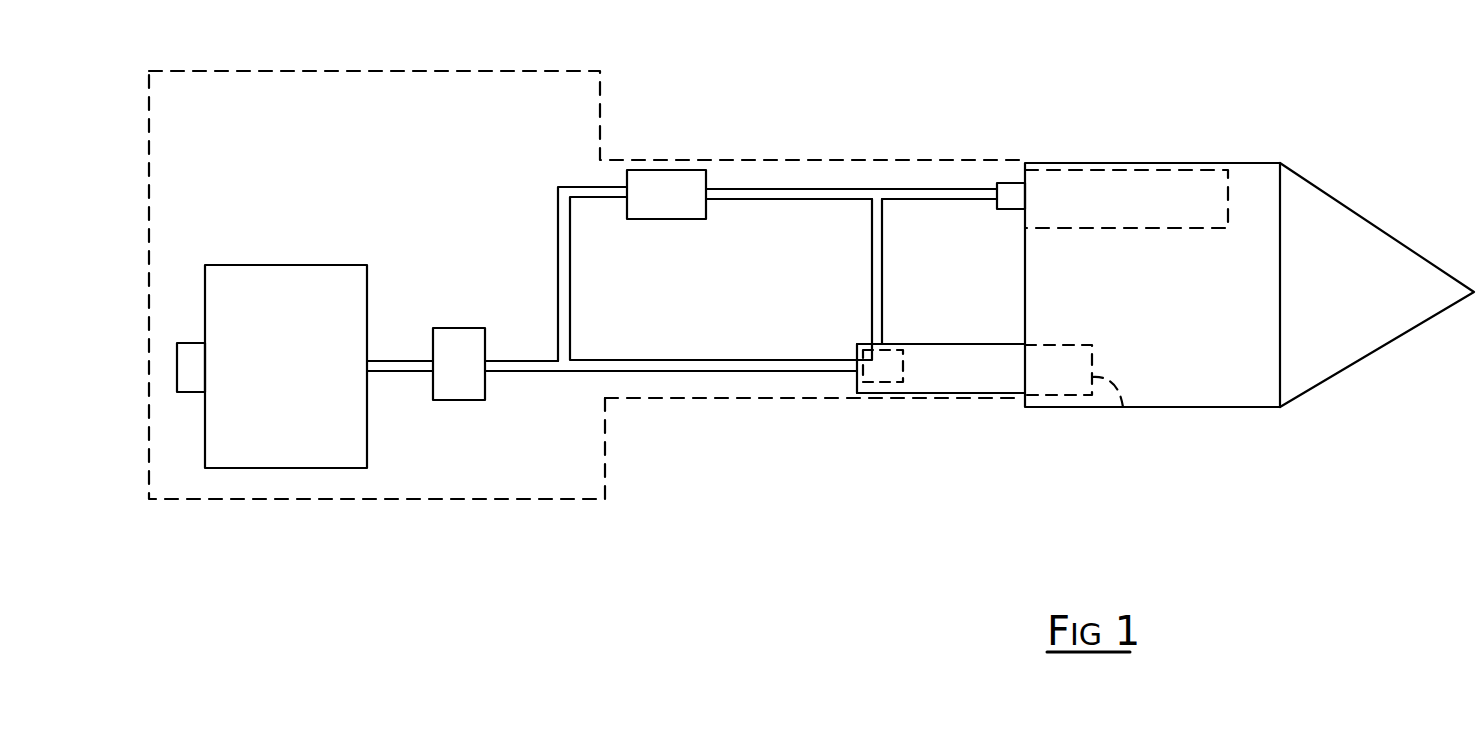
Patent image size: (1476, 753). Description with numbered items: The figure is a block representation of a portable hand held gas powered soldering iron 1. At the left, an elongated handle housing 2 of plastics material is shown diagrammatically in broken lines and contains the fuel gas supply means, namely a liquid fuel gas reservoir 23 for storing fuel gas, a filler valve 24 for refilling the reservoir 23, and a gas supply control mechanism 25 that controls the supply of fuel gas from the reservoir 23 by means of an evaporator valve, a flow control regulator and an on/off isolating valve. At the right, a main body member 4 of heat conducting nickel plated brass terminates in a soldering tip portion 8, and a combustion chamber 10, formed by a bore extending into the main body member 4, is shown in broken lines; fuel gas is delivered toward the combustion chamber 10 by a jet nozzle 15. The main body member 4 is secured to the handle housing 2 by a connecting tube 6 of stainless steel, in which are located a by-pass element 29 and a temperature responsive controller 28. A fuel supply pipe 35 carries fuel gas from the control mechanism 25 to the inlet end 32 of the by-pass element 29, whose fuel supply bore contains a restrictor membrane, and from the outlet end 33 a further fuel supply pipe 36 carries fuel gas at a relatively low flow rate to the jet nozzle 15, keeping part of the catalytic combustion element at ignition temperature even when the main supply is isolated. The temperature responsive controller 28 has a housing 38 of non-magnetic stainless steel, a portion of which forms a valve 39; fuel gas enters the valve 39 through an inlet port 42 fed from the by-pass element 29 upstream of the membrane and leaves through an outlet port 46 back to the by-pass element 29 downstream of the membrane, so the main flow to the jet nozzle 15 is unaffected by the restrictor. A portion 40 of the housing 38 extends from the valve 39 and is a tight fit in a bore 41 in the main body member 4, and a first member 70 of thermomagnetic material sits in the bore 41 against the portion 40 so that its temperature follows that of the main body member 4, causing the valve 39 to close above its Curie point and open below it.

The gas powered soldering iron 1 is at (953, 53).
The handle housing 2 is at (384, 72).
The main body member 4 is at (1233, 390).
The connecting tube 6 is at (742, 400).
The soldering tip portion 8 is at (1380, 330).
The combustion chamber 10 is at (1107, 170).
The jet nozzle 15 is at (1010, 193).
The liquid fuel gas reservoir 23 is at (312, 284).
The filler valve 24 is at (189, 355).
The gas supply control mechanism 25 is at (462, 347).
The temperature responsive controller 28 is at (965, 383).
The by-pass element 29 is at (675, 187).
The inlet end 32 is at (625, 188).
The outlet end 33 is at (707, 195).
The fuel supply pipe 35 is at (565, 283).
The fuel supply pipe 36 is at (828, 197).
The housing 38 is at (927, 376).
The valve 39 is at (878, 383).
The portion of the housing 40 is at (990, 343).
The bore 41 is at (1053, 395).
The inlet port 42 is at (855, 367).
The outlet port 46 is at (880, 343).
The first member 70 is at (1122, 407).